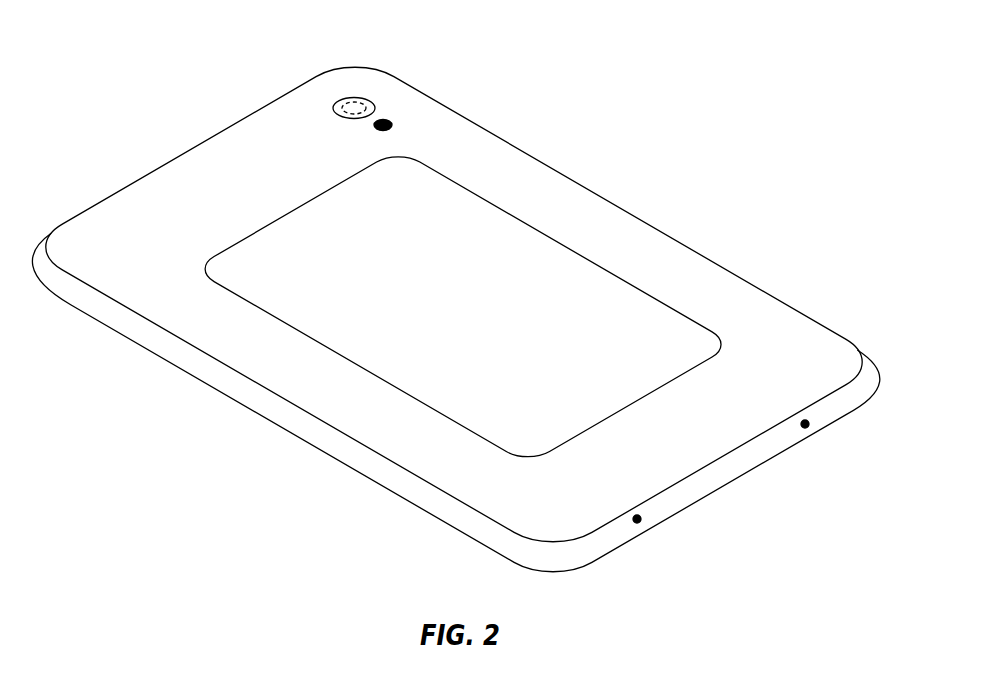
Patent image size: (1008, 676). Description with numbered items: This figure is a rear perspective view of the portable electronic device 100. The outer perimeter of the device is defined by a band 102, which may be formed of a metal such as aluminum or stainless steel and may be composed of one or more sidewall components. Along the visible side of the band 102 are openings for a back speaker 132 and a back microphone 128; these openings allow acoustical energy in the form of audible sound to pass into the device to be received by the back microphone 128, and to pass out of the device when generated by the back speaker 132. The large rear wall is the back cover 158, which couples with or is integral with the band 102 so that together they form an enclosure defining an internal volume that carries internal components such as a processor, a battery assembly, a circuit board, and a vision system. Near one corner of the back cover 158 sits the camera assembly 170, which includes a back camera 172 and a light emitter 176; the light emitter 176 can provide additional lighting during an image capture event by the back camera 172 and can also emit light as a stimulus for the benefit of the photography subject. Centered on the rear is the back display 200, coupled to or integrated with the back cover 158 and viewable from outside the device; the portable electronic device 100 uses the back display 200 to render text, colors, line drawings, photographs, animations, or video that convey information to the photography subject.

The portable electronic device 100 is at (453, 313).
The band 102 is at (293, 417).
The back microphone 128 is at (640, 524).
The back speaker 132 is at (808, 430).
The back cover 158 is at (797, 364).
The camera assembly 170 is at (296, 82).
The back camera 172 is at (357, 98).
The light emitter 176 is at (393, 123).
The back display 200 is at (593, 282).